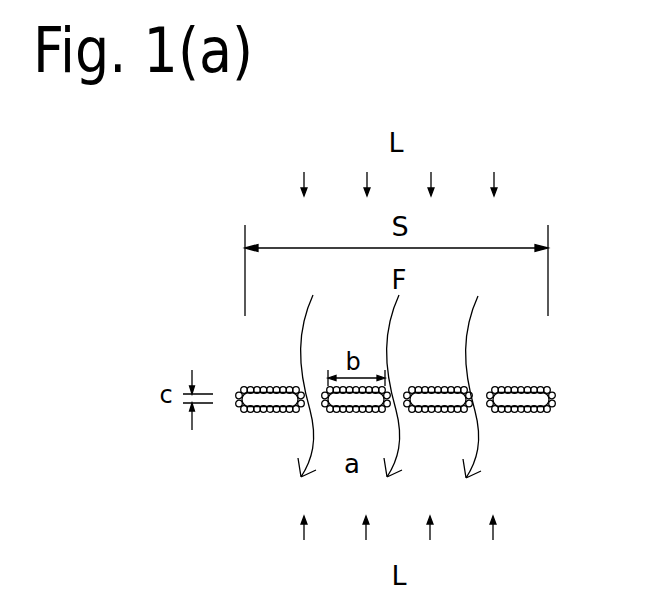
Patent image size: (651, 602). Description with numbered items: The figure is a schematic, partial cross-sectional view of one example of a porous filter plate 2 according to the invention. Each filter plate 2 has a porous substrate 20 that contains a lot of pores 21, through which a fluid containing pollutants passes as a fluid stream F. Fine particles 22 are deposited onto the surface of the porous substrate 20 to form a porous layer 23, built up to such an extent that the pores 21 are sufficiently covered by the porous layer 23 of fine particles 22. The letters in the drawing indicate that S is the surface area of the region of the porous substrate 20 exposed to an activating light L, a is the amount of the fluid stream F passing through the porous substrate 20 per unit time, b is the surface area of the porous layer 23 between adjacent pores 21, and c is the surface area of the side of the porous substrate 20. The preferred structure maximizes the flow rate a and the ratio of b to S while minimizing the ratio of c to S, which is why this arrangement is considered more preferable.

The filter plate 2 is at (243, 350).
The porous substrate 20 is at (518, 392).
The pores 21 is at (483, 392).
The fine particles 22 is at (532, 411).
The porous layer 23 is at (558, 398).